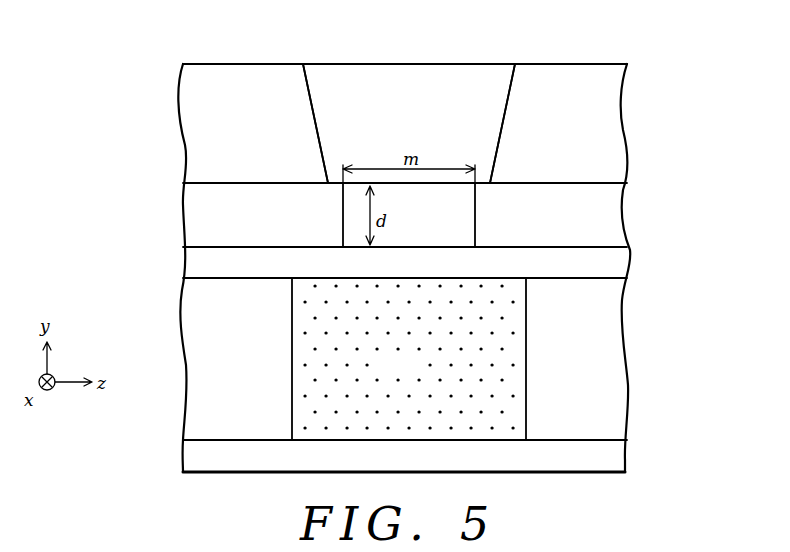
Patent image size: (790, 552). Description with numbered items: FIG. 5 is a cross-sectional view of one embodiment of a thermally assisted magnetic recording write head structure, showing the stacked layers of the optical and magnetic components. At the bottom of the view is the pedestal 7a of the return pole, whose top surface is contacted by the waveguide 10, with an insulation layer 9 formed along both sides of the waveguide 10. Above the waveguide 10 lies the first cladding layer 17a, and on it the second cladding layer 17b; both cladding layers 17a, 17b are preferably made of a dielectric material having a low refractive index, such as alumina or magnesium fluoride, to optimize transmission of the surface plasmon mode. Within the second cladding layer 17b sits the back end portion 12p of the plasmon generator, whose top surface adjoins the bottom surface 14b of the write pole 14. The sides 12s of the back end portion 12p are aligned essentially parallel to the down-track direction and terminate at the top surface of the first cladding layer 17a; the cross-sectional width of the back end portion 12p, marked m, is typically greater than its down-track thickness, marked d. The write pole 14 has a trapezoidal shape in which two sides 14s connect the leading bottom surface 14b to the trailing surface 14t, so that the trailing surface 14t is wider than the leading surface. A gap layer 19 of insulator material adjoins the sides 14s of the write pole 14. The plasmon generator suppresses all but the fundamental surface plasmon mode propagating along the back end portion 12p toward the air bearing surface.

The pedestal 7a is at (610, 458).
The insulation layer 9 is at (198, 419).
The waveguide 10 is at (307, 351).
The back end portion 12p is at (450, 215).
The sides 12s is at (343, 222).
The write pole 14 is at (400, 78).
The bottom surface 14b is at (337, 184).
The sides 14s is at (313, 132).
The trailing surface 14t is at (453, 64).
The first cladding layer 17a is at (610, 262).
The second cladding layer 17b is at (198, 210).
The gap layer 19 is at (272, 80).